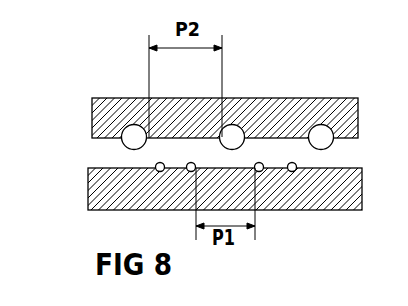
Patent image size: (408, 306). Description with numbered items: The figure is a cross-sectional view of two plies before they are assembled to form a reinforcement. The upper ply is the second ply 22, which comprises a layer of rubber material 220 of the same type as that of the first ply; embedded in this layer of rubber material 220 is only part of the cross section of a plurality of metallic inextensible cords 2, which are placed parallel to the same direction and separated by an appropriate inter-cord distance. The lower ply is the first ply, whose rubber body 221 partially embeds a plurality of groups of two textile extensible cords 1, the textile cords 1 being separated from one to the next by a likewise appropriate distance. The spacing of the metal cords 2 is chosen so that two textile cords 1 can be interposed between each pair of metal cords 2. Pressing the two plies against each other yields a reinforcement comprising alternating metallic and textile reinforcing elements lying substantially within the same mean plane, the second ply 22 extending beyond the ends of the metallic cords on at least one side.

The textile extensible cords 1 is at (260, 170).
The metallic inextensible cords 2 is at (320, 135).
The second ply 22 is at (340, 112).
The layer of rubber material 220 is at (116, 115).
The substrate body 221 is at (98, 180).